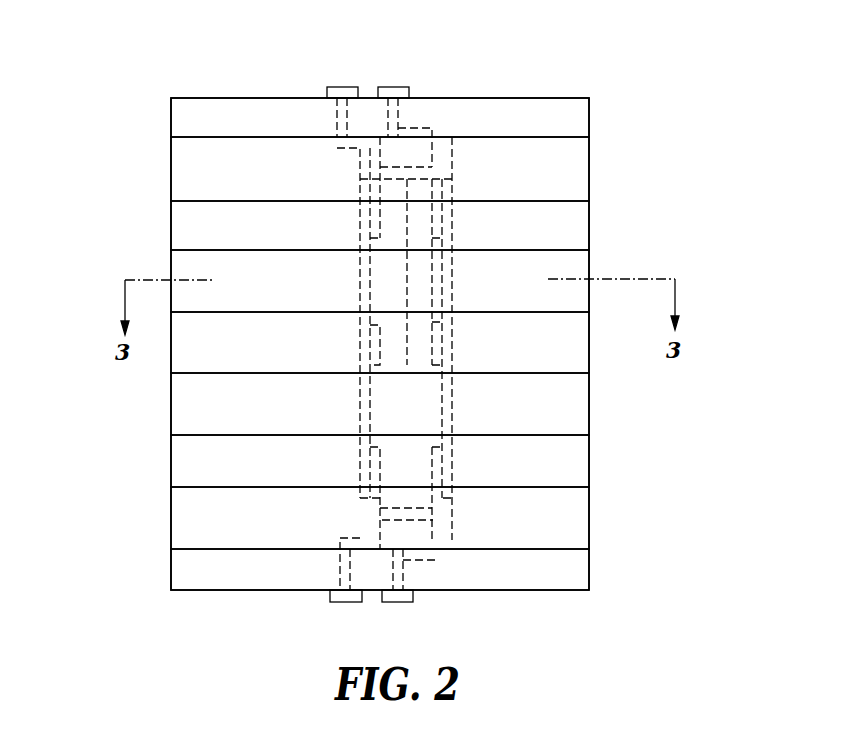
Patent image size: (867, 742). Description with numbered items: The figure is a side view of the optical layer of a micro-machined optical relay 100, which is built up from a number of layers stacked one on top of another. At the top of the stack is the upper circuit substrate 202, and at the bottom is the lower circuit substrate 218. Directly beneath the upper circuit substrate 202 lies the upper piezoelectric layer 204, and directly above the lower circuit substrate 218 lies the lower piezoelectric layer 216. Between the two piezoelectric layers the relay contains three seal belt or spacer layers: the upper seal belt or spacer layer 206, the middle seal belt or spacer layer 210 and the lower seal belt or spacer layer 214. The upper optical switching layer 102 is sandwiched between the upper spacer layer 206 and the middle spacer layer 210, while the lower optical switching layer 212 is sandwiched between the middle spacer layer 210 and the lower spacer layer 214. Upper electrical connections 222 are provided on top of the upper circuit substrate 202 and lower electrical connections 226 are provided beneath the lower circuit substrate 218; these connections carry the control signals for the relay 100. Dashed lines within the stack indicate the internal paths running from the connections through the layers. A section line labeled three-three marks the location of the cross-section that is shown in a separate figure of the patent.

The optical relay 100 is at (127, 223).
The upper optical switching layer 102 is at (588, 272).
The upper circuit substrate 202 is at (588, 110).
The upper piezoelectric layer 204 is at (588, 168).
The upper seal belt or spacer layer 206 is at (588, 225).
The middle seal belt or spacer layer 210 is at (590, 343).
The lower optical switching layer 212 is at (590, 405).
The lower seal belt or spacer layer 214 is at (590, 458).
The lower piezoelectric layer 216 is at (590, 511).
The lower circuit substrate 218 is at (590, 572).
The upper electrical connections 222 is at (392, 87).
The lower electrical connections 226 is at (397, 602).